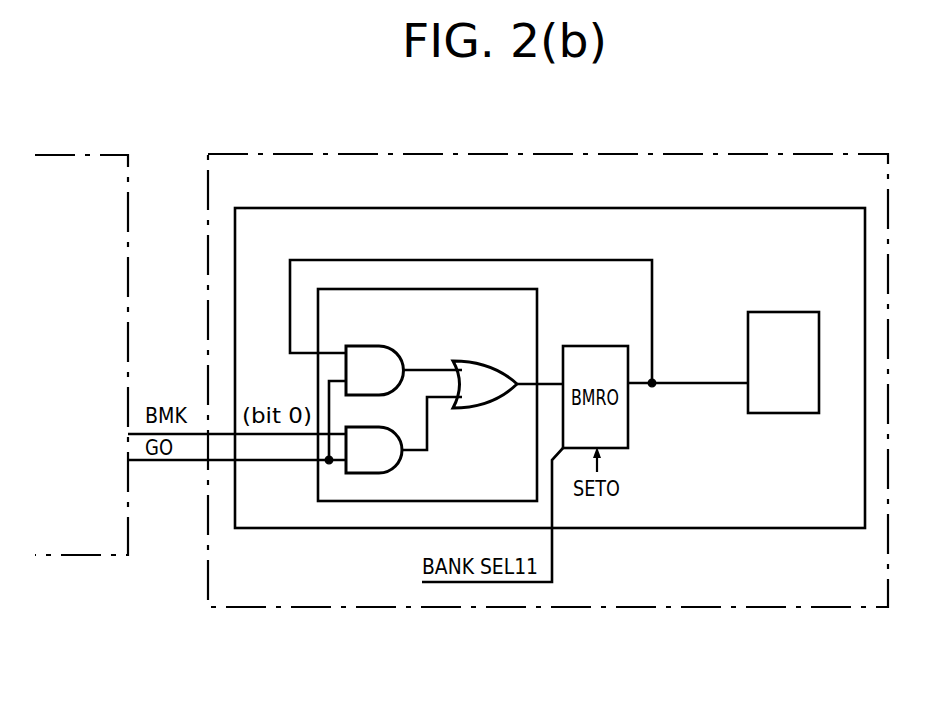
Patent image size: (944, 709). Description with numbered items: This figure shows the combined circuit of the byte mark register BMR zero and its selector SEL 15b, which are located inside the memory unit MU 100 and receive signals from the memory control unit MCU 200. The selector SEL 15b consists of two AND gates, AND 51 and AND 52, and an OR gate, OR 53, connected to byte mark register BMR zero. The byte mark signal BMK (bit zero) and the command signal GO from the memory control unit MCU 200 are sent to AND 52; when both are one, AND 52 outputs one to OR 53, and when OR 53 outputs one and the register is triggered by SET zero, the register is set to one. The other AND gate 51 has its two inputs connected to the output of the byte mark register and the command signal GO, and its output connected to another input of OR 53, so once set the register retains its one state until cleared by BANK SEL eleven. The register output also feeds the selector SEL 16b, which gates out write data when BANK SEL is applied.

The memory control unit MCU 200 is at (82, 155).
The memory unit MU 100 is at (247, 154).
The selector SEL 15b is at (425, 289).
The AND gate 51 is at (401, 349).
The AND gate 52 is at (398, 466).
The OR gate 53 is at (478, 361).
The selector SEL 16b is at (786, 312).